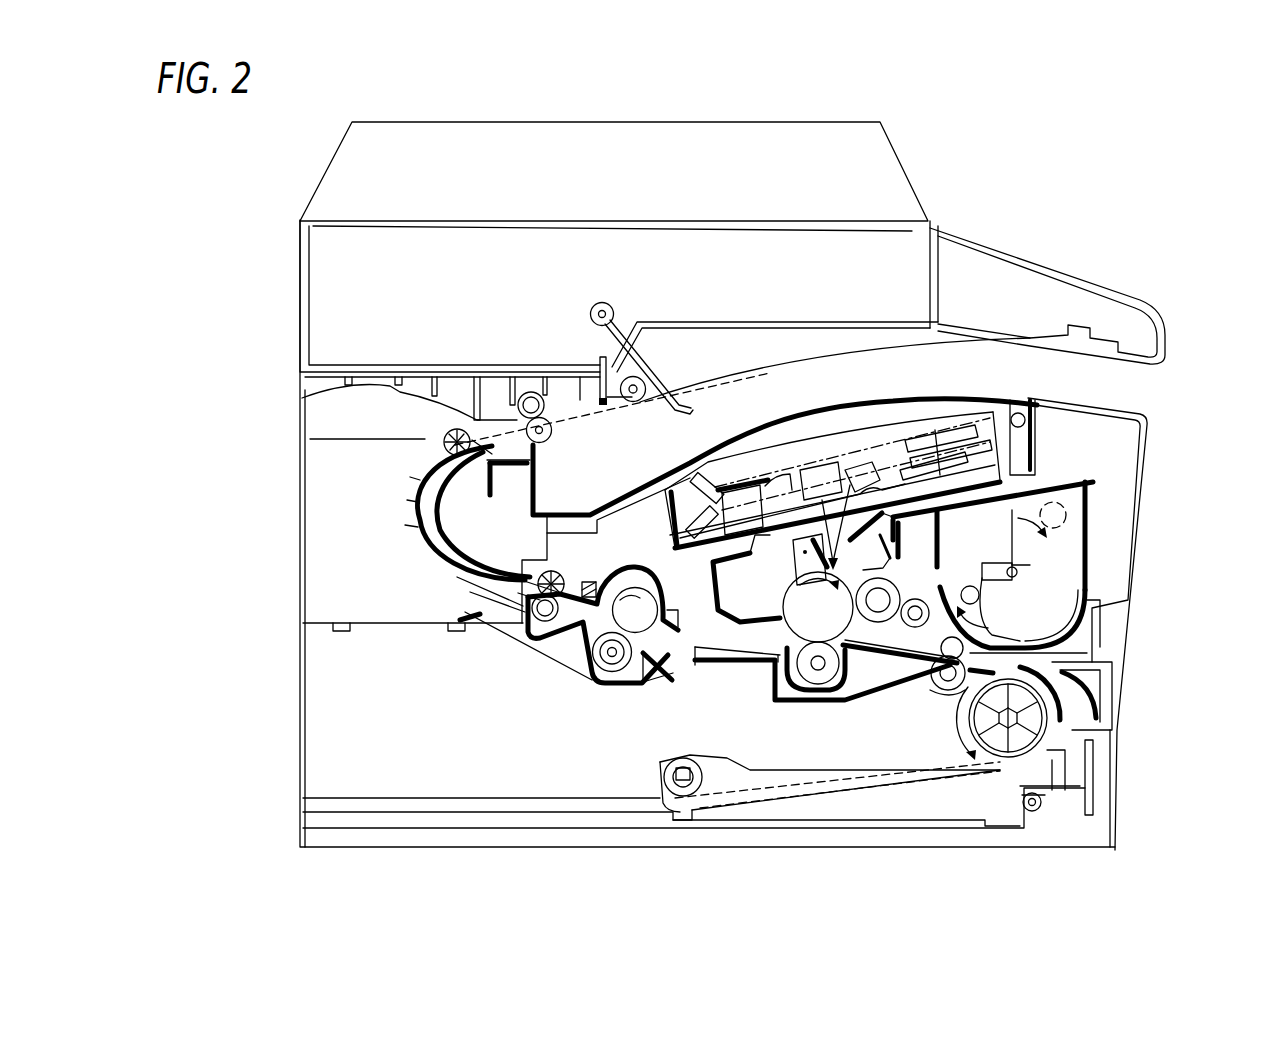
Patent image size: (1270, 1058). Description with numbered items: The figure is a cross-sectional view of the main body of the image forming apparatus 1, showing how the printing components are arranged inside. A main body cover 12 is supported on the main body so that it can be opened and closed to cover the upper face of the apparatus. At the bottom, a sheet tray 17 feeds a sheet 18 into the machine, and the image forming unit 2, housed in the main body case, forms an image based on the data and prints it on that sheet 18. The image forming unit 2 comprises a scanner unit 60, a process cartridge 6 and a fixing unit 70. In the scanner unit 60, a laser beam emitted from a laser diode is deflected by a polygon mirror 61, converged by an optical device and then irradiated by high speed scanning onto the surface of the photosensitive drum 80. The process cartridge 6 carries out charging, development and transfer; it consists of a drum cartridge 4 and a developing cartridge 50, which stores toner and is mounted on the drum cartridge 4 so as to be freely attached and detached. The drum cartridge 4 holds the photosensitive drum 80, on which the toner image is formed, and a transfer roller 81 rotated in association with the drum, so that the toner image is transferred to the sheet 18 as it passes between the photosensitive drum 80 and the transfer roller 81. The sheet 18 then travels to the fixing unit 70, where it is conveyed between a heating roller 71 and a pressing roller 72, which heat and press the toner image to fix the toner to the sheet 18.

The image forming apparatus 1 is at (1105, 243).
The image forming unit 2 is at (729, 678).
The drum cartridge 4 is at (871, 550).
The process cartridge 6 is at (891, 550).
The main body cover 12 is at (842, 121).
The sheet tray 17 is at (1116, 790).
The sheet 18 is at (378, 795).
The developing cartridge 50 is at (1068, 480).
The scanner unit 60 is at (902, 428).
The polygon mirror 61 is at (942, 495).
The fixing unit 70 is at (604, 659).
The heating roller 71 is at (645, 628).
The pressing roller 72 is at (612, 672).
The photosensitive drum 80 is at (800, 612).
The transfer roller 81 is at (816, 678).